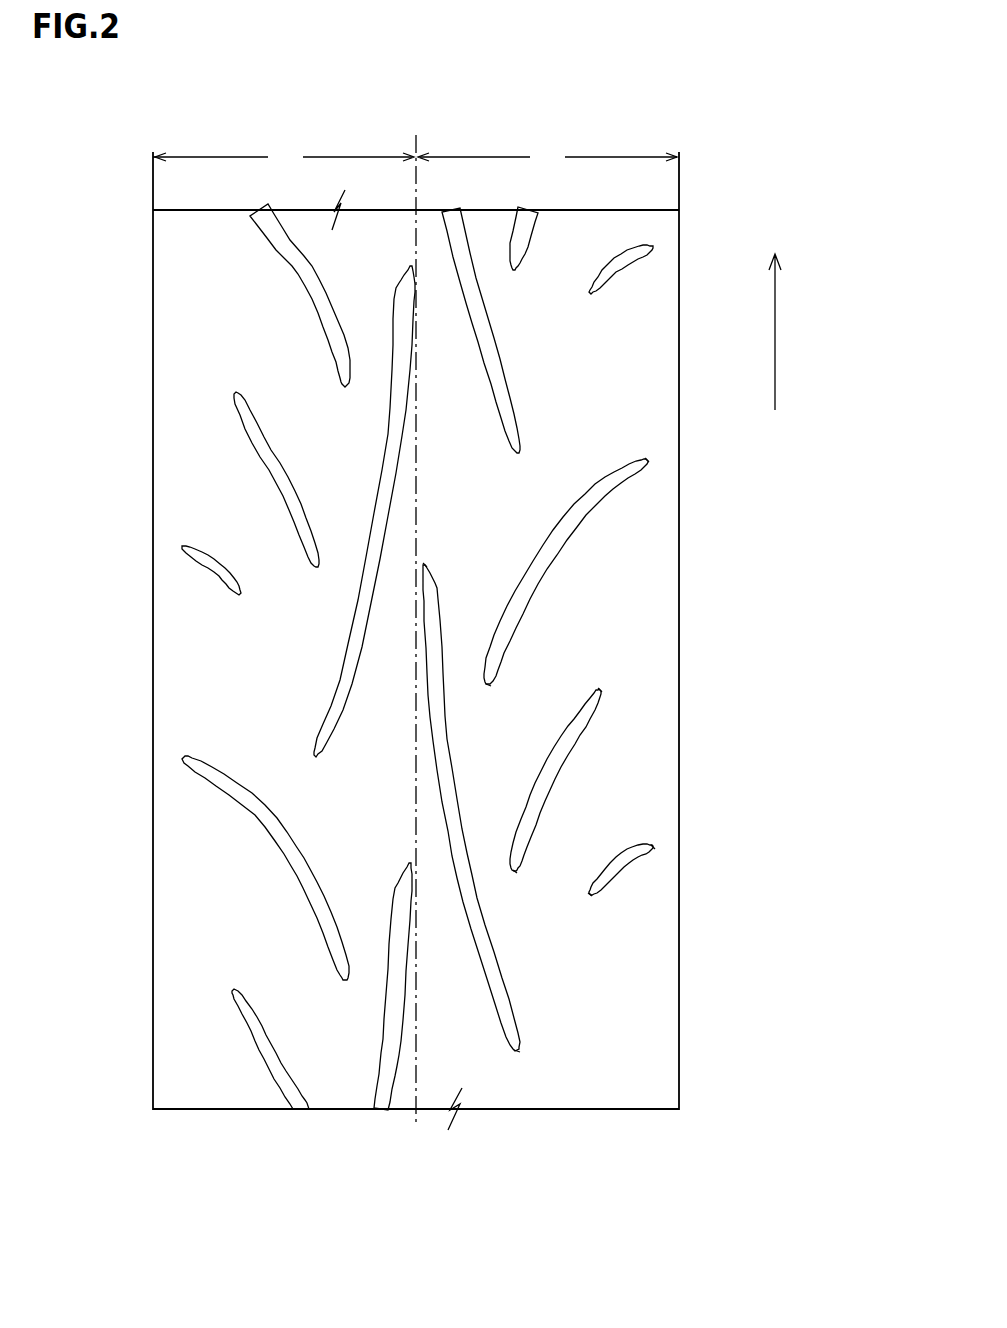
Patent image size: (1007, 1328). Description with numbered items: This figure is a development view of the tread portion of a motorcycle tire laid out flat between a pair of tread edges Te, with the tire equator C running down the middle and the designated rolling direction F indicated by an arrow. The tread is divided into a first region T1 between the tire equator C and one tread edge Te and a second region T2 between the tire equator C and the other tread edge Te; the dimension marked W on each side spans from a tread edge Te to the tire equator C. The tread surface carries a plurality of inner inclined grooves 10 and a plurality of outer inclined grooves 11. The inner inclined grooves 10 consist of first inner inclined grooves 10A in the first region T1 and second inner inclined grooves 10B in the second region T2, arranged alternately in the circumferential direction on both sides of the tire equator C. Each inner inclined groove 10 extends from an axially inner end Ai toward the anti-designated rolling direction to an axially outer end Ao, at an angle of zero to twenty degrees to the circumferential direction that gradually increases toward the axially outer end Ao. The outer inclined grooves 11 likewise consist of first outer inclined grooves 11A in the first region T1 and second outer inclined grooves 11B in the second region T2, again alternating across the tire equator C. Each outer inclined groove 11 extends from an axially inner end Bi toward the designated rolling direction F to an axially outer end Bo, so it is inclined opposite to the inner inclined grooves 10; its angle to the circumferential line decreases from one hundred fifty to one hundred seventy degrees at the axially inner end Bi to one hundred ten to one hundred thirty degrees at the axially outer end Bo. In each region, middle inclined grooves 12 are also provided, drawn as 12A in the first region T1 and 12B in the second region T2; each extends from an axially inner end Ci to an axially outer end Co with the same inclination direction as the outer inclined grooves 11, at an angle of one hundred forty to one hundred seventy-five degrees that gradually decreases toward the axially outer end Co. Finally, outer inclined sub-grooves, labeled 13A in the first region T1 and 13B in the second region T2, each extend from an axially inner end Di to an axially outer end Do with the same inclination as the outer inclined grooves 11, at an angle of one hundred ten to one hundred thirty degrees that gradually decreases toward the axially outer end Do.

The inner inclined groove 10 is at (383, 1045).
The first inner inclined groove 10A is at (497, 968).
The second inner inclined groove 10B is at (337, 667).
The outer inclined groove 11 is at (297, 877).
The first outer inclined groove 11A is at (560, 537).
The second outer inclined groove 11B is at (297, 273).
The middle inclined groove 12 is at (258, 1043).
The third inclined groove (first tread half) 12A is at (563, 763).
The third inclined groove (second tread half) 12B is at (250, 430).
The fourth inclined groove (first tread half) 13A is at (613, 880).
The fourth inclined groove (second tread half) 13B is at (220, 577).
The axially inner end Ai is at (429, 550).
The axially outer end Ao is at (521, 1069).
The axially inner end Bi is at (502, 694).
The axially outer end Bo is at (664, 466).
The axially inner end Ci is at (519, 883).
The axially outer end Co is at (608, 683).
The axially inner end Di is at (594, 909).
The axially outer end Do is at (665, 851).
The tire equator C is at (416, 618).
The tread edge Te is at (153, 259).
The first region T1 is at (589, 1133).
The second region T2 is at (248, 1123).
The tread half width W is at (415, 159).
The designated rolling direction F is at (785, 332).